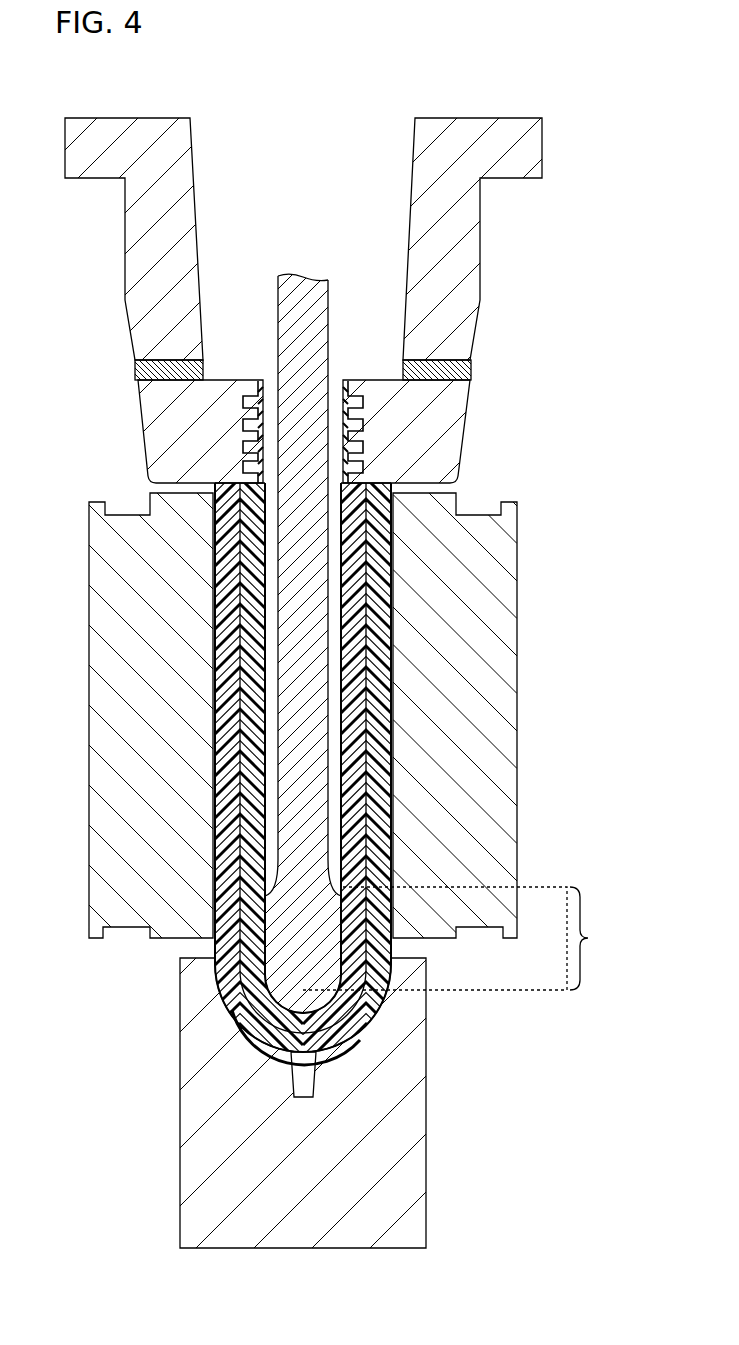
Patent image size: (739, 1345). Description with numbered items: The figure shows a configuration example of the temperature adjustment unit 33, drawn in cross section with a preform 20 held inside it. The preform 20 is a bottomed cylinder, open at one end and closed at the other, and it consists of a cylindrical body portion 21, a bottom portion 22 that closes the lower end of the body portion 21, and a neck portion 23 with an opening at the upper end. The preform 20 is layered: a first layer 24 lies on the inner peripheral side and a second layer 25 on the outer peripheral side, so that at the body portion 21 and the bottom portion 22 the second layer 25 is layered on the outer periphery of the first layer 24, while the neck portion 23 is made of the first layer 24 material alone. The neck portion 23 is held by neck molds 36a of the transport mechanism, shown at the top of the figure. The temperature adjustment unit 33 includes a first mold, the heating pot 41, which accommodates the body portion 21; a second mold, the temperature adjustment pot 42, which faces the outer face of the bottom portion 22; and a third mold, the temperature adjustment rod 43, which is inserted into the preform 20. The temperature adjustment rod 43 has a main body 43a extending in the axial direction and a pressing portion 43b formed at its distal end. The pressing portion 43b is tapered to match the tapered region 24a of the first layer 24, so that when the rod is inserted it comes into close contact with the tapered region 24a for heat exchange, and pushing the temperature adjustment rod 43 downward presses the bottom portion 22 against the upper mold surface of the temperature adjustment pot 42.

The temperature adjustment unit 33 is at (576, 126).
The neck mold 36a is at (127, 252).
The temperature adjustment rod 43 is at (208, 609).
The main body 43a is at (275, 347).
The pressing portion 43b is at (302, 930).
The neck portion 23 is at (360, 437).
The preform 20 is at (408, 782).
The first layer 24 is at (352, 640).
The second layer 25 is at (383, 690).
The body portion 21 is at (390, 785).
The bottom portion 22 is at (350, 1042).
The tapered region 24a is at (468, 938).
The heating pot 41 is at (88, 712).
The temperature adjustment pot 42 is at (427, 1118).